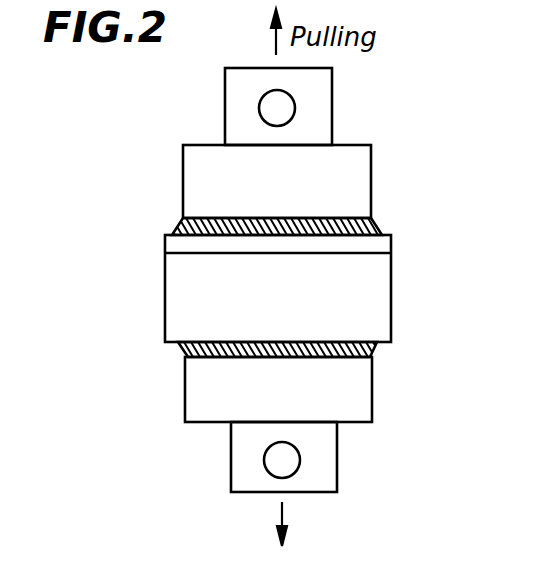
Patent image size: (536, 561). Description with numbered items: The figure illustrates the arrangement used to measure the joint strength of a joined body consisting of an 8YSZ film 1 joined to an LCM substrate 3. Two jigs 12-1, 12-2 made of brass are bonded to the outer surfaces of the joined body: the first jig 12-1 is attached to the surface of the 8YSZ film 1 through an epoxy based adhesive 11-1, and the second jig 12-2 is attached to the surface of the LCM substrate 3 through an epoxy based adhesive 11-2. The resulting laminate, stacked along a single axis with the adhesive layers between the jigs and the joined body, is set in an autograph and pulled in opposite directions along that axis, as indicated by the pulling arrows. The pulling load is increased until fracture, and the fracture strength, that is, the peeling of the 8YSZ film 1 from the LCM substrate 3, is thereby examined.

The 8YSZ film 1 is at (385, 244).
The LCM substrate 3 is at (375, 296).
The epoxy based adhesive 11-1 is at (368, 230).
The epoxy based adhesive 11-2 is at (378, 348).
The jig 12-1 is at (360, 162).
The jig 12-2 is at (360, 396).